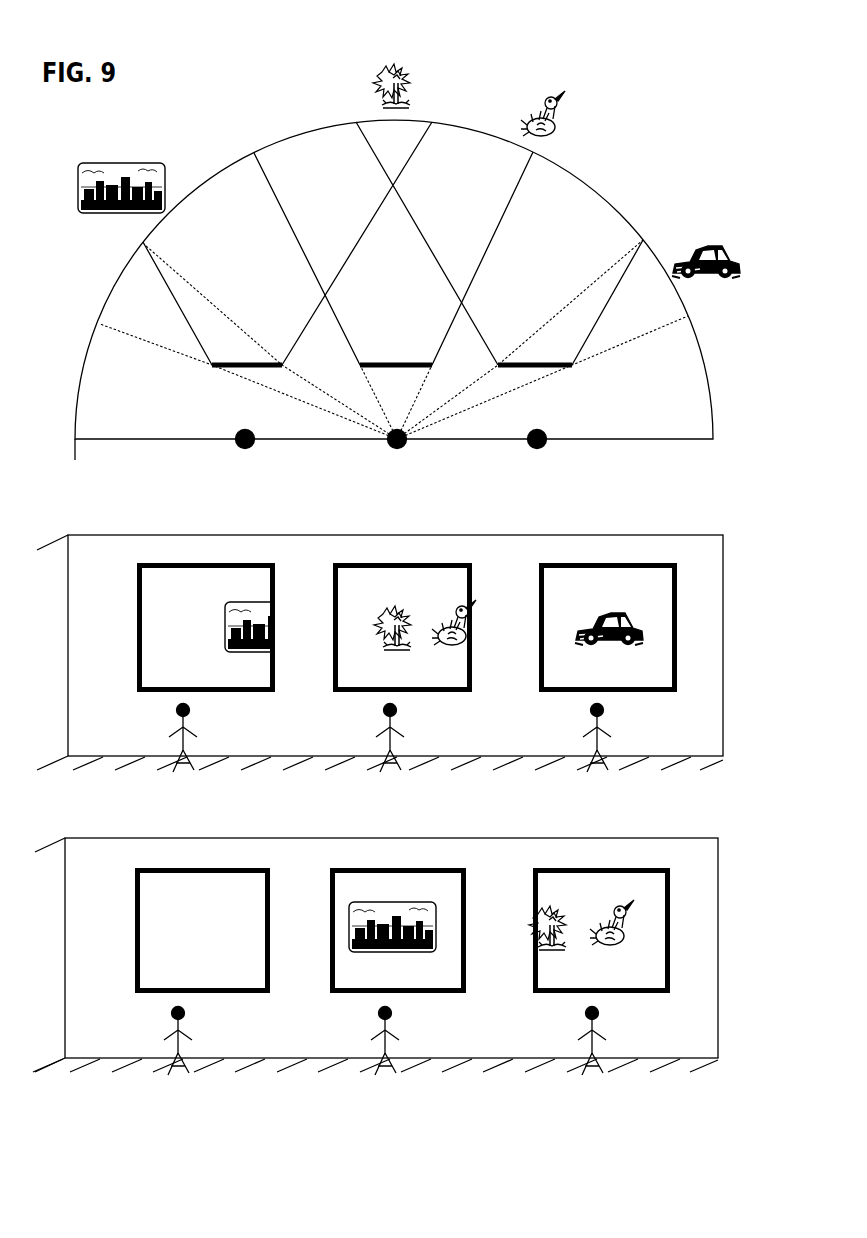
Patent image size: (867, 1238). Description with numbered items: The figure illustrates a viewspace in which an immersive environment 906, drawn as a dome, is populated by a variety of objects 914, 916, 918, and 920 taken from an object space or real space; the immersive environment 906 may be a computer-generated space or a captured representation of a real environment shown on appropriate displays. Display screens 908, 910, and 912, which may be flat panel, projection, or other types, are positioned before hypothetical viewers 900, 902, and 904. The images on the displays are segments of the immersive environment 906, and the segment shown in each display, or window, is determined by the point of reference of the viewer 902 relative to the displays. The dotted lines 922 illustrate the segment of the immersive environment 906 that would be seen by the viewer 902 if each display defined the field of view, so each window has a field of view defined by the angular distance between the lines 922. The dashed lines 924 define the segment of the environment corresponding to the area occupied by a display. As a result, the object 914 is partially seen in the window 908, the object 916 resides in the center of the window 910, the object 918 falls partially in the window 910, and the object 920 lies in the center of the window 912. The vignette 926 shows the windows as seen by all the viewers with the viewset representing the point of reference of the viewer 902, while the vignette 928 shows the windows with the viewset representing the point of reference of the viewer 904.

The hypothetical viewer 900 is at (237, 453).
The viewer 902 is at (395, 453).
The hypothetical viewer 904 is at (532, 457).
The immersive environment 906 is at (248, 155).
The display screen 908 is at (248, 362).
The display screen 910 is at (393, 360).
The display screen 912 is at (542, 362).
The object 914 is at (112, 162).
The object 916 is at (420, 83).
The object 918 is at (567, 118).
The object 920 is at (693, 243).
The dotted lines 922 is at (273, 390).
The dashed lines 924 is at (90, 320).
The vignette 926 is at (675, 543).
The vignette 928 is at (680, 857).